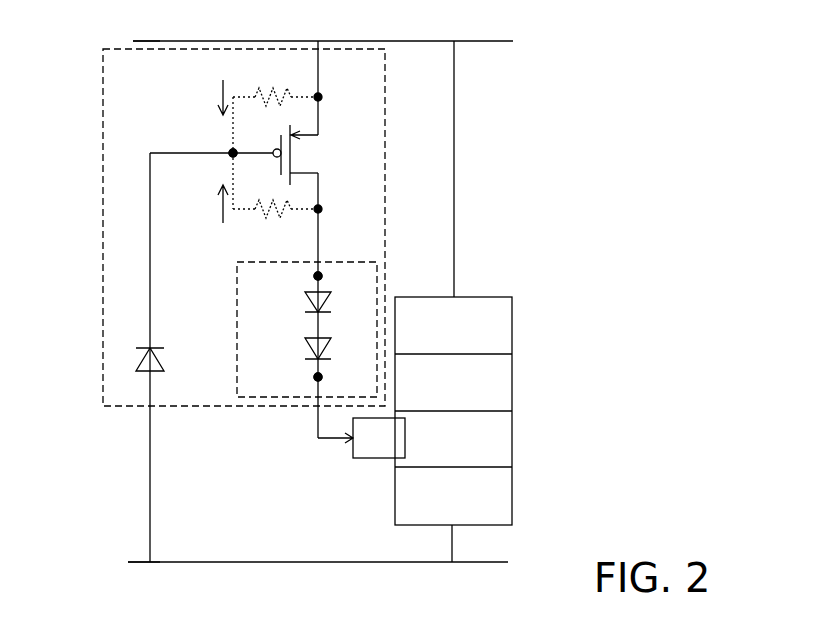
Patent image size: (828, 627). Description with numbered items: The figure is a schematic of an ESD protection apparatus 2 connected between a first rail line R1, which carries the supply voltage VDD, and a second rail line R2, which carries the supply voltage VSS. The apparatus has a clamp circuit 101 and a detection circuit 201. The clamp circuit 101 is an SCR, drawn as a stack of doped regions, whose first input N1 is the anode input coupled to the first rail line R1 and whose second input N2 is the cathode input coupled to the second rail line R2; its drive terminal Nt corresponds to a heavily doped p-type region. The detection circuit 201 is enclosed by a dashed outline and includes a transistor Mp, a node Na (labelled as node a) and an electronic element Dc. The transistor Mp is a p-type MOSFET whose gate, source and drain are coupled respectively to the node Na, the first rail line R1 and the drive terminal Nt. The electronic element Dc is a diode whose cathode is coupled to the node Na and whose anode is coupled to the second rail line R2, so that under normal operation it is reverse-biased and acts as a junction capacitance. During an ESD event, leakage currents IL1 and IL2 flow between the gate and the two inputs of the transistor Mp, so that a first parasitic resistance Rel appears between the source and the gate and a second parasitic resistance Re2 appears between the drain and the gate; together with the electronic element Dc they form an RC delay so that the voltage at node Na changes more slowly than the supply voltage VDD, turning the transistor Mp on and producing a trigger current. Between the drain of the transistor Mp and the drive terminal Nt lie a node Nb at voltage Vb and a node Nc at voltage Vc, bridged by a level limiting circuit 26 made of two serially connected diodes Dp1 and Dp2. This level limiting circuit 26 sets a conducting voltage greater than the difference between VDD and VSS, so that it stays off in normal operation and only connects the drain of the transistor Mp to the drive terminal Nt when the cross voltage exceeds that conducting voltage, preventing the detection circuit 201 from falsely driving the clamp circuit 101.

The ESD protection apparatus 2 is at (726, 24).
The clamp circuit 101 is at (486, 284).
The detection circuit 201 is at (203, 407).
The level limiting circuit 26 is at (268, 398).
The drive terminal Nt is at (372, 460).
The node Na is at (230, 156).
The node a is at (225, 140).
The node Nb is at (322, 277).
The node Nc is at (322, 378).
The voltage at node Nb Vb is at (293, 280).
The voltage at node Nc Vc is at (292, 382).
The first rail line R1 is at (148, 41).
The second rail line R2 is at (142, 562).
The supply voltage VDD is at (323, 22).
The supply voltage VSS is at (318, 580).
The first input N1 is at (476, 169).
The second input N2 is at (472, 543).
The first parasitic resistance Rel is at (277, 101).
The second parasitic resistance Re2 is at (277, 205).
The leakage current IL1 is at (199, 97).
The leakage current IL2 is at (198, 205).
The transistor Mp is at (307, 155).
The diode Dp1 is at (289, 307).
The diode Dp2 is at (289, 348).
The electronic element Dc is at (137, 344).